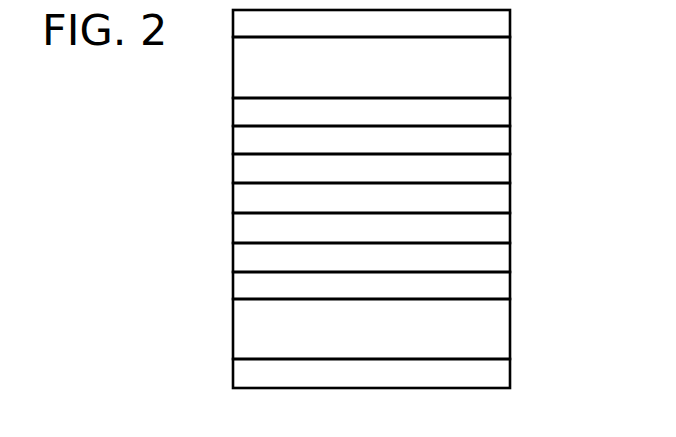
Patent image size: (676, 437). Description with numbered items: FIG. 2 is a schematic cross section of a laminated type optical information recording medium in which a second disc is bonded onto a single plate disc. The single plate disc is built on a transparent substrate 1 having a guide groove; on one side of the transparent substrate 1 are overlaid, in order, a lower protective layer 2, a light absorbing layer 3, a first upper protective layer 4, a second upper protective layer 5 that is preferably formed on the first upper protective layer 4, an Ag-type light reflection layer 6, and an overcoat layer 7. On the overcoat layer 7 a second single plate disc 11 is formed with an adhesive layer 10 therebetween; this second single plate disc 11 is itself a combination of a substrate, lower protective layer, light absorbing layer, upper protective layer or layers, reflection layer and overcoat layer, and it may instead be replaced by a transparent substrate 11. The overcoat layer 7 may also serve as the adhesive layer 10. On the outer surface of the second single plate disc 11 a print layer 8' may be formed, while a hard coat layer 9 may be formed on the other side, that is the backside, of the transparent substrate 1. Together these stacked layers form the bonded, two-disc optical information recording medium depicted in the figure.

The print layer 8' is at (395, 24).
The second single plate disc 11 is at (487, 72).
The adhesive layer 10 is at (487, 114).
The overcoat layer 7 is at (487, 147).
The Ag-type light reflection layer 6 is at (487, 174).
The second upper protective layer 5 is at (487, 203).
The first upper protective layer 4 is at (487, 232).
The light absorbing layer 3 is at (487, 260).
The lower protective layer 2 is at (487, 292).
The transparent substrate 1 is at (487, 332).
The hard coat layer 9 is at (487, 378).